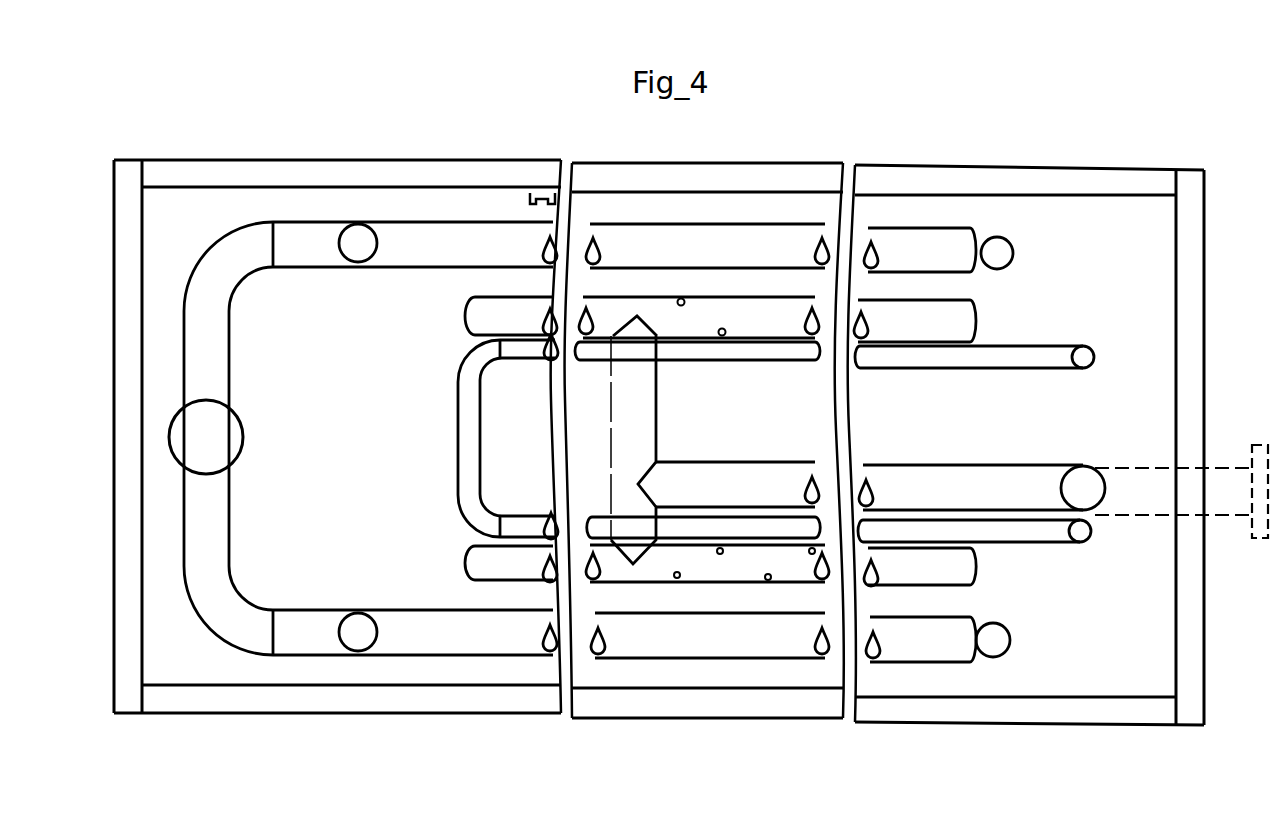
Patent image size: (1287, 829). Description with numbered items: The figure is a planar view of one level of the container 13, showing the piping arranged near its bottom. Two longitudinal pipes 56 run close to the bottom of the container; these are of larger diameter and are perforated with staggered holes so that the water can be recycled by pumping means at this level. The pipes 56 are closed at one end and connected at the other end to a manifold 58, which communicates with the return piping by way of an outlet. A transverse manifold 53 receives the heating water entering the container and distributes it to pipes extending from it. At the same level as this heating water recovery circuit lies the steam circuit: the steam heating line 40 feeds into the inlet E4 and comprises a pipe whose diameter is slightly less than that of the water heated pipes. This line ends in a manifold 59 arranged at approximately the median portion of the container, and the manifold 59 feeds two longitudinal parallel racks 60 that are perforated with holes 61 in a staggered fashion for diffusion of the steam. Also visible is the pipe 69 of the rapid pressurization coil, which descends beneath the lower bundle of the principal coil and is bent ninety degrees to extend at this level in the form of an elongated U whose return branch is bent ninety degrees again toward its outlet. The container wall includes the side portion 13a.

The container 13 is at (1124, 265).
The frame side member 13a is at (1188, 628).
The steam heating line 40 is at (1032, 482).
The transverse manifold 53 is at (210, 437).
The longitudinal pipes 56 is at (403, 240).
The manifold 58 is at (208, 585).
The manifold 59 is at (638, 425).
The longitudinal parallel racks 60 is at (952, 322).
The holes 61 is at (681, 299).
The pipe 69 is at (470, 448).
The inlet E4 is at (1181, 491).